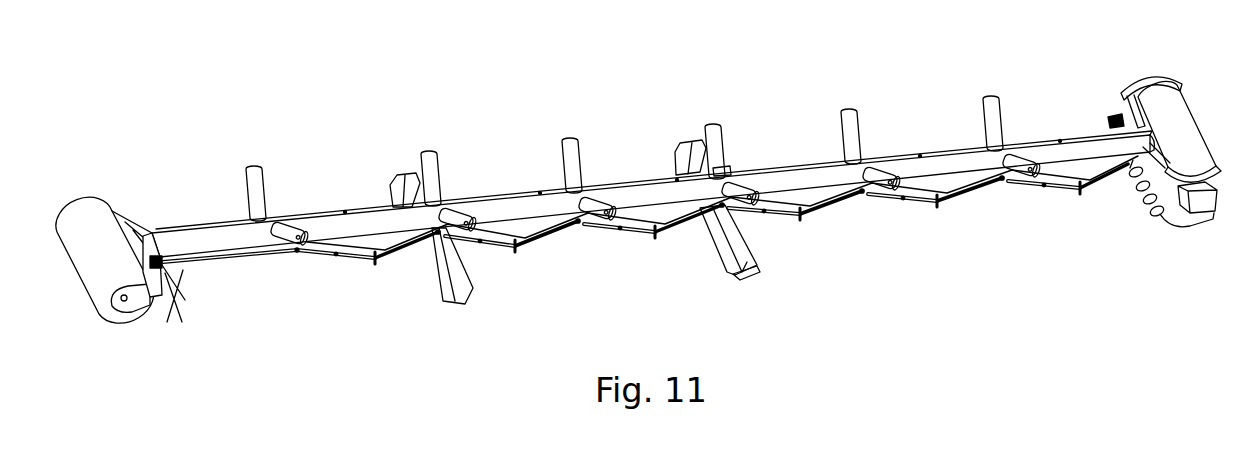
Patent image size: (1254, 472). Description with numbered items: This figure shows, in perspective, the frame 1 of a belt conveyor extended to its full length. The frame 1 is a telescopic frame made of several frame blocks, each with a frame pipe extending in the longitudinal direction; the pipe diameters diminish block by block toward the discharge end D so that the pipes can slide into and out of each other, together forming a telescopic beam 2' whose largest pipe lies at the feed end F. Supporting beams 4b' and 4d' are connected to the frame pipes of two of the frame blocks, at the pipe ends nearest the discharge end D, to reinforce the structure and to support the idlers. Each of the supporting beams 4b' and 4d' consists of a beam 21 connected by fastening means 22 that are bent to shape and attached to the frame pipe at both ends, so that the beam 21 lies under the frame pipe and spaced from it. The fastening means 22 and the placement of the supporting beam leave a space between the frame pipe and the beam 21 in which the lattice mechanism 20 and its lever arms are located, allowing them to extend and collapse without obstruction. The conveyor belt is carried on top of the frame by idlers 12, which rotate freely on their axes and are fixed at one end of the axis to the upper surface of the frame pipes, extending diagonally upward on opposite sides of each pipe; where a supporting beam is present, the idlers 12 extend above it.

The frame 1 is at (925, 59).
The telescopic beam 2' is at (652, 184).
The supporting beam 4b' is at (430, 194).
The supporting beam 4d' is at (689, 112).
The idler 12 is at (742, 185).
The lattice mechanism 20 is at (552, 223).
The beam 21 is at (715, 235).
The fastening means 22 is at (679, 173).
The feed end F is at (120, 228).
The discharge end D is at (1164, 128).